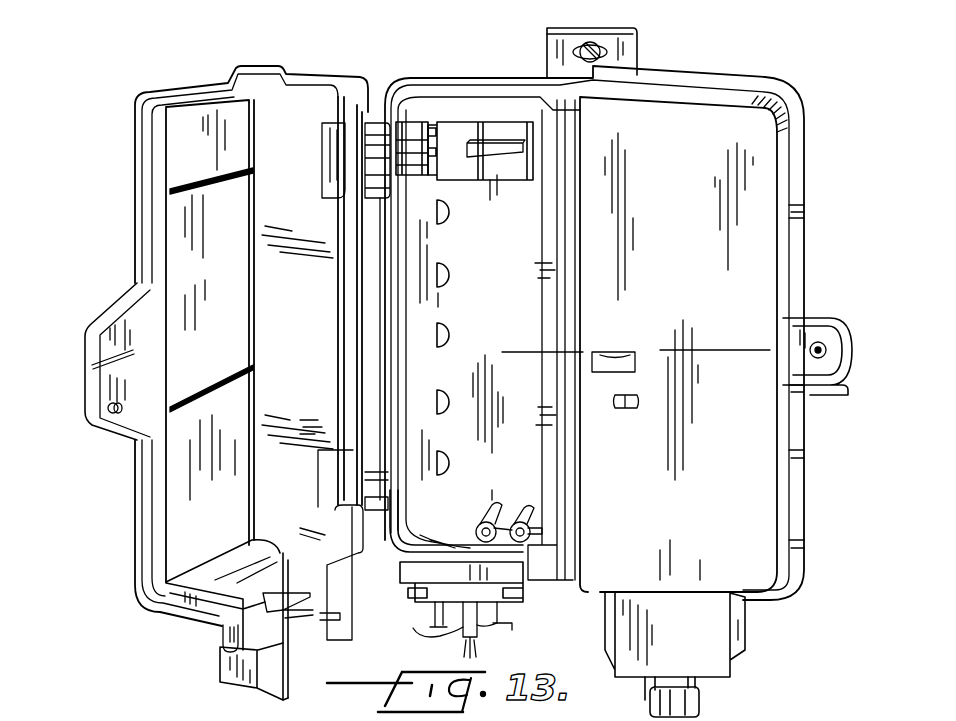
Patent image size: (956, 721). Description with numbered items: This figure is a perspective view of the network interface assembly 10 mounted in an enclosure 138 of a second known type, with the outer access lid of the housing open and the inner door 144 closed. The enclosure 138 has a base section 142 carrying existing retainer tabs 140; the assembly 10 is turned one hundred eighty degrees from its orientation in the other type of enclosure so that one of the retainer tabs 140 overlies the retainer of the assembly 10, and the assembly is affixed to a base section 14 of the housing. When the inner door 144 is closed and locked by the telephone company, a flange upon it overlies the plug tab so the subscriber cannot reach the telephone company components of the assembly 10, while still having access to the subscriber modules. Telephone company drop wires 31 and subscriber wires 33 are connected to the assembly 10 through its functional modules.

The enclosure 138 is at (410, 75).
The network interface assembly 10 is at (500, 120).
The subscriber wires 33 is at (395, 128).
The retainer tabs 140 is at (454, 211).
The base section 142 is at (520, 325).
The inner door 144 is at (705, 293).
The base section 14 is at (47, 425).
The telephone company drop wires 31 is at (700, 699).